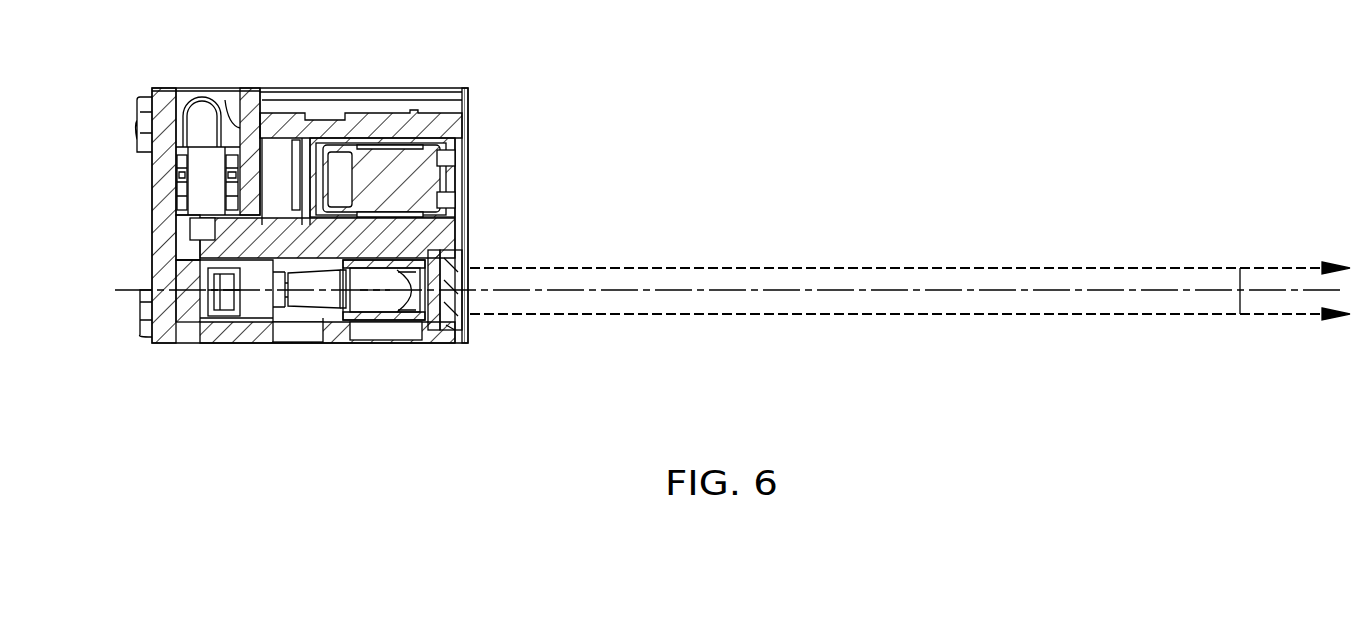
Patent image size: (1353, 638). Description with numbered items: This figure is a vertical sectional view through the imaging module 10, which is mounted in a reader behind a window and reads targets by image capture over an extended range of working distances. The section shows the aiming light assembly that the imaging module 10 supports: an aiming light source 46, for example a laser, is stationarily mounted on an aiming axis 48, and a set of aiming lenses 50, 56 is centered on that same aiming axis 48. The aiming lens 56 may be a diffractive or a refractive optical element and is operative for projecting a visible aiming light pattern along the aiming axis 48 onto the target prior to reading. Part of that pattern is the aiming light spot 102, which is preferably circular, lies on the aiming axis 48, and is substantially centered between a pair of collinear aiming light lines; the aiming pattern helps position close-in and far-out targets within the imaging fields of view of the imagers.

The imaging module 10 is at (108, 27).
The aiming light source 46 is at (228, 320).
The aiming axis 48 is at (1150, 290).
The aiming lens 50 is at (405, 305).
The aiming lens 56 is at (455, 315).
The aiming light spot 102 is at (1240, 282).